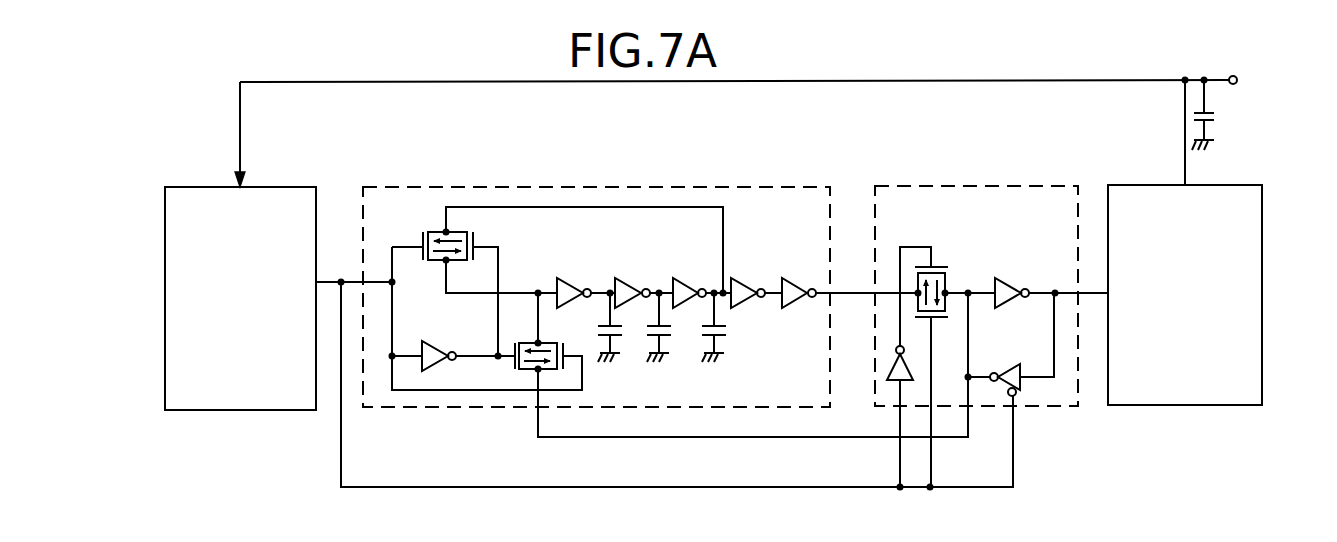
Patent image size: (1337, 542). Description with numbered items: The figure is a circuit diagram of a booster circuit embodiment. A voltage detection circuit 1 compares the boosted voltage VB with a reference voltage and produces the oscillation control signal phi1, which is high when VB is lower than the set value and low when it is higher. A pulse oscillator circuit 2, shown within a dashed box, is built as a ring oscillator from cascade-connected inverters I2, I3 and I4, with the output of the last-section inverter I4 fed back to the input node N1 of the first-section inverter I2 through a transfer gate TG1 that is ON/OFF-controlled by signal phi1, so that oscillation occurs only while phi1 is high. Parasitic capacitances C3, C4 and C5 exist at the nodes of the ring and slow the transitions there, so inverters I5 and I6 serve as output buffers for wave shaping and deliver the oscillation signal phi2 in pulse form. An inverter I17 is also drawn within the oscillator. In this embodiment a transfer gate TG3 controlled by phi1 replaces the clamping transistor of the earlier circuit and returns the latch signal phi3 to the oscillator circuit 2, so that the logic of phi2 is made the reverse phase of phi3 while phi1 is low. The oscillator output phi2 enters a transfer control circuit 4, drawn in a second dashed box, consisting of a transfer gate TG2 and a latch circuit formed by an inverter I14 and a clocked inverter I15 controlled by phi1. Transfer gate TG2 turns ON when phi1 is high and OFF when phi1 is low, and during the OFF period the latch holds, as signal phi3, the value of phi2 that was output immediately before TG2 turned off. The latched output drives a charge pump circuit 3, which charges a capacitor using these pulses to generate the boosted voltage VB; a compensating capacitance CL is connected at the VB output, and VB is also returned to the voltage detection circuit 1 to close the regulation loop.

The voltage detection circuit 1 is at (262, 187).
The pulse oscillator circuit 2 is at (598, 186).
The charge pump circuit 3 is at (1200, 405).
The transfer control circuit 4 is at (1043, 407).
The transfer gate TG1 is at (423, 237).
The transfer gate TG2 is at (938, 266).
The transfer gate TG3 is at (515, 368).
The first-section inverter I2 is at (570, 283).
The inverter I3 is at (631, 283).
The last-section inverter I4 is at (687, 283).
The output buffer inverter I5 is at (747, 283).
The output buffer inverter I6 is at (796, 283).
The inverter I14 is at (1012, 280).
The clocked inverter I15 is at (1005, 370).
The inverter I17 is at (438, 341).
The input node N1 is at (463, 296).
The parasitic capacitance C3 is at (622, 330).
The parasitic capacitance C4 is at (670, 330).
The parasitic capacitance C5 is at (723, 330).
The compensating capacitance CL is at (1218, 119).
The boosted voltage VB is at (758, 79).
The oscillation control signal phi1 is at (565, 488).
The oscillation signal phi2 is at (848, 292).
The latch signal phi3 is at (947, 438).